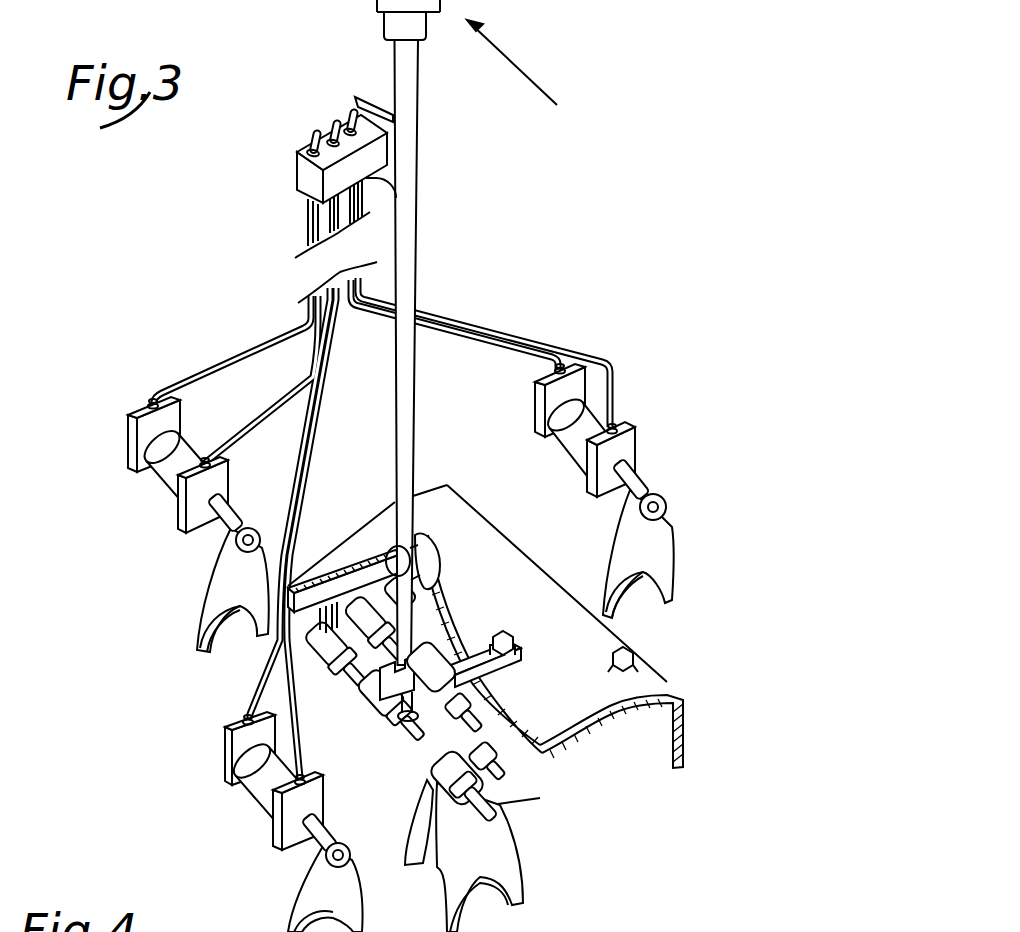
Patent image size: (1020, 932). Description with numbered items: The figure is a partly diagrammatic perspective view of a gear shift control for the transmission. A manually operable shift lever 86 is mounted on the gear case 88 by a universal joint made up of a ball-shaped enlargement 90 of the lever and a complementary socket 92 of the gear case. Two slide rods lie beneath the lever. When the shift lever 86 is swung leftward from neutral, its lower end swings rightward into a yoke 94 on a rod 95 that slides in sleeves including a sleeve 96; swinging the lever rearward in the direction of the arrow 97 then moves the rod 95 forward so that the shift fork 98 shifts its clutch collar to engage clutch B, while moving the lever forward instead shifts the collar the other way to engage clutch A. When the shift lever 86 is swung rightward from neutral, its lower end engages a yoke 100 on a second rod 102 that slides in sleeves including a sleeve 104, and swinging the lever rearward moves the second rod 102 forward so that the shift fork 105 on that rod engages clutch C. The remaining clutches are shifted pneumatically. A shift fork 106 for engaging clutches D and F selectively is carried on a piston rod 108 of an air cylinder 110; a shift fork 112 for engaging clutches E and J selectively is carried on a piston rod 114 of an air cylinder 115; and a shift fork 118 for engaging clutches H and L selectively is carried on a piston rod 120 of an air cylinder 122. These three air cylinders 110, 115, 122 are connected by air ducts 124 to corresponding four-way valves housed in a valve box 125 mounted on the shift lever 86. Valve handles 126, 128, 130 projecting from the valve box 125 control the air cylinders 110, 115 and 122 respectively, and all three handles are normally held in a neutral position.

The shift lever 86 is at (405, 157).
The gear case 88 is at (485, 543).
The ball-shaped enlargement 90 is at (390, 553).
The socket 92 is at (432, 558).
The yoke 94 is at (432, 673).
The rod 95 is at (459, 710).
The sleeve 96 is at (354, 596).
The arrow 97 is at (497, 50).
The shift fork 98 is at (488, 793).
The yoke 100 is at (387, 710).
The second rod 102 is at (410, 752).
The sleeve 104 is at (318, 593).
The shift fork 105 is at (503, 873).
The shift fork 106 is at (218, 577).
The piston rod 108 is at (218, 504).
The air cylinder 110 is at (172, 465).
The shift fork 112 is at (290, 921).
The piston rod 114 is at (283, 843).
The air cylinder 115 is at (272, 780).
The shift fork 118 is at (643, 536).
The piston rod 120 is at (622, 465).
The air cylinder 122 is at (585, 413).
The air ducts 124 is at (320, 400).
The valve box 125 is at (310, 175).
The valve handle 126 is at (306, 133).
The valve handle 128 is at (327, 121).
The valve handle 130 is at (346, 108).